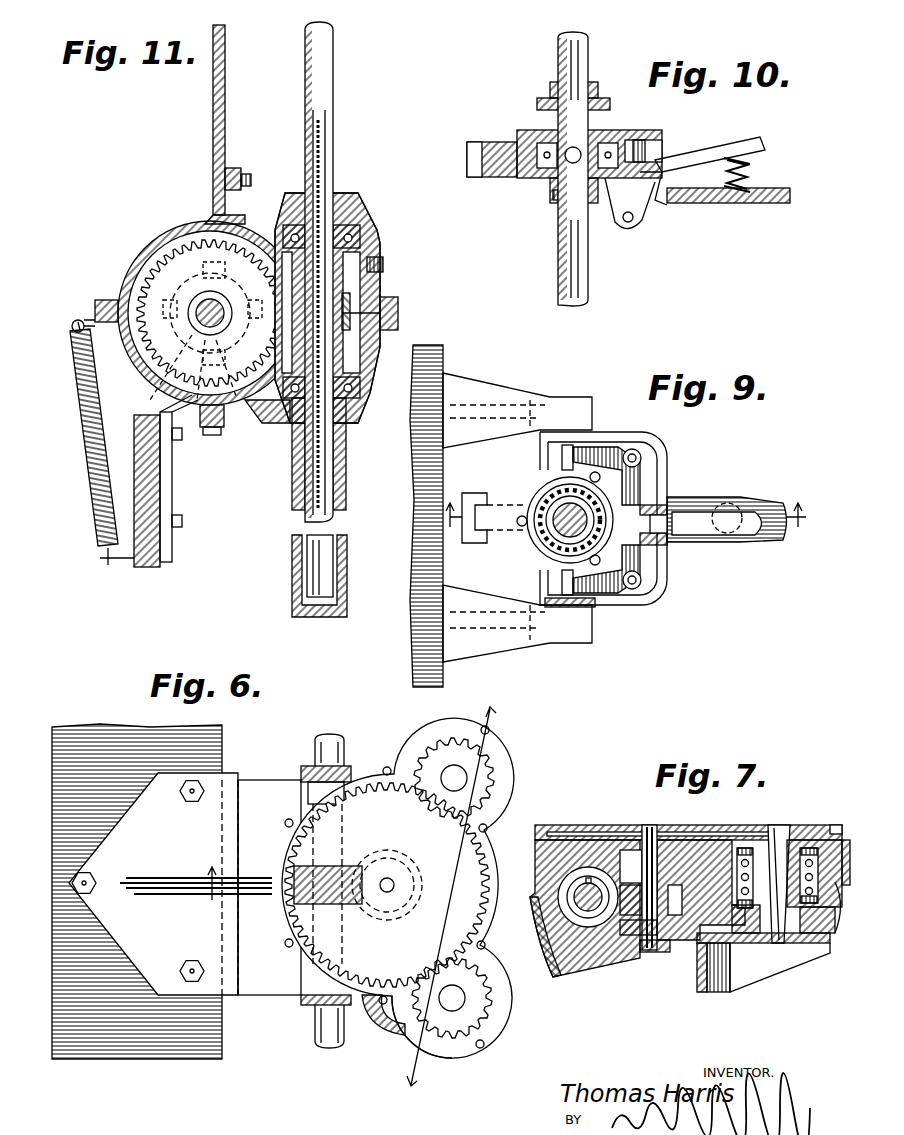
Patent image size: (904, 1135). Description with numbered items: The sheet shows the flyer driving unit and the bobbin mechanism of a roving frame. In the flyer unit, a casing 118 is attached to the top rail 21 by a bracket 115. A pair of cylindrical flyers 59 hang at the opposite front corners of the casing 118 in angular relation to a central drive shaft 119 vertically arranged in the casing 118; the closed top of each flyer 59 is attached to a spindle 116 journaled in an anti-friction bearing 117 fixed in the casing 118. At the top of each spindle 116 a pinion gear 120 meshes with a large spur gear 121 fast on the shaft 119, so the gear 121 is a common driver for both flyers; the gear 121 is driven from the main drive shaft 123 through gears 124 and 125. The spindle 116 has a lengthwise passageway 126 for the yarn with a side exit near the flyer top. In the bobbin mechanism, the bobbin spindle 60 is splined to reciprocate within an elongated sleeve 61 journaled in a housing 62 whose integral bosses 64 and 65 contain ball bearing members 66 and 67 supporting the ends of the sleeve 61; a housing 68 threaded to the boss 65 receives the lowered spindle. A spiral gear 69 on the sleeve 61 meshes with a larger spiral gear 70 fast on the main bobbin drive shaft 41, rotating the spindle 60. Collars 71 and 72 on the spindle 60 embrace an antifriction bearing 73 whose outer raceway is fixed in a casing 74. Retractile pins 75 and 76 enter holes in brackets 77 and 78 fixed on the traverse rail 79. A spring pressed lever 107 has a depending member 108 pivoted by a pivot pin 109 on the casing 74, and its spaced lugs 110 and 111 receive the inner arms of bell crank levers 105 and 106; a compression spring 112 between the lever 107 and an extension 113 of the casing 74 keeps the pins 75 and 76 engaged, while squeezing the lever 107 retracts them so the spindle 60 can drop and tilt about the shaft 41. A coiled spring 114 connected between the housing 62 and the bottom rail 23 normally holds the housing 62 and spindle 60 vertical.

In FIG. 6, the top rail 21 is at (205, 1047).
In FIG. 11, the bottom rail 23 is at (158, 548).
In FIG. 11, the shaft 41 is at (208, 305).
In FIG. 7, the cylindrical flyer 59 is at (700, 988).
In FIG. 11, the bobbin spindle 60 is at (320, 80).
In FIG. 10, the bobbin spindle 60 is at (588, 56).
In FIG. 9, the bobbin spindle 60 is at (556, 542).
In FIG. 11, the elongated sleeve 61 is at (384, 263).
In FIG. 11, the housing 62 is at (126, 256).
In FIG. 11, the cylindrical boss 64 is at (374, 216).
In FIG. 11, the cylindrical boss 65 is at (285, 418).
In FIG. 11, the ball bearing member 66 is at (362, 392).
In FIG. 11, the ball bearing member 67 is at (381, 240).
In FIG. 11, the housing 68 is at (352, 564).
In FIG. 11, the spiral gear 69 is at (368, 297).
In FIG. 11, the spiral gear 70 is at (170, 251).
In FIG. 10, the collar 71 is at (612, 105).
In FIG. 10, the collar 72 is at (546, 202).
In FIG. 10, the antifriction bearing 73 is at (532, 135).
In FIG. 10, the casing 74 is at (661, 147).
In FIG. 9, the casing 74 is at (665, 462).
In FIG. 9, the retractile pin 75 is at (562, 456).
In FIG. 9, the retractile pin 76 is at (578, 612).
In FIG. 9, the bracket 77 is at (520, 373).
In FIG. 9, the bracket 78 is at (535, 650).
In FIG. 9, the traverse or lifting rail 79 is at (443, 681).
In FIG. 9, the bell crank lever 105 is at (621, 452).
In FIG. 9, the bell crank lever 106 is at (652, 560).
In FIG. 10, the spring pressed lever 107 is at (725, 150).
In FIG. 9, the spring pressed lever 107 is at (726, 482).
In FIG. 10, the depending member 108 is at (653, 212).
In FIG. 10, the pivot pin 109 is at (631, 223).
In FIG. 9, the lug 110 is at (645, 518).
In FIG. 9, the lug 111 is at (699, 540).
In FIG. 10, the compression spring 112 is at (752, 175).
In FIG. 10, the extension 113 is at (781, 204).
In FIG. 11, the coiled spring 114 is at (96, 482).
In FIG. 6, the bracket 115 is at (260, 794).
In FIG. 7, the bracket 115 is at (561, 977).
In FIG. 6, the spindle 116 is at (468, 772).
In FIG. 7, the spindle 116 is at (740, 908).
In FIG. 7, the anti-friction bearing 117 is at (840, 907).
In FIG. 6, the casing 118 is at (406, 1043).
In FIG. 7, the casing 118 is at (573, 826).
In FIG. 6, the central drive shaft 119 is at (391, 888).
In FIG. 7, the central drive shaft 119 is at (646, 950).
In FIG. 6, the pinion gear 120 is at (452, 759).
In FIG. 7, the pinion gear 120 is at (770, 832).
In FIG. 6, the spur gear 121 is at (492, 932).
In FIG. 7, the spur gear 121 is at (696, 840).
In FIG. 6, the main drive shaft 123 is at (344, 748).
In FIG. 7, the main drive shaft 123 is at (589, 908).
In FIG. 6, the gear 124 is at (356, 906).
In FIG. 7, the gear 124 is at (597, 878).
In FIG. 6, the gear 125 is at (380, 851).
In FIG. 7, the gear 125 is at (668, 952).
In FIG. 7, the passageway 126 is at (785, 832).